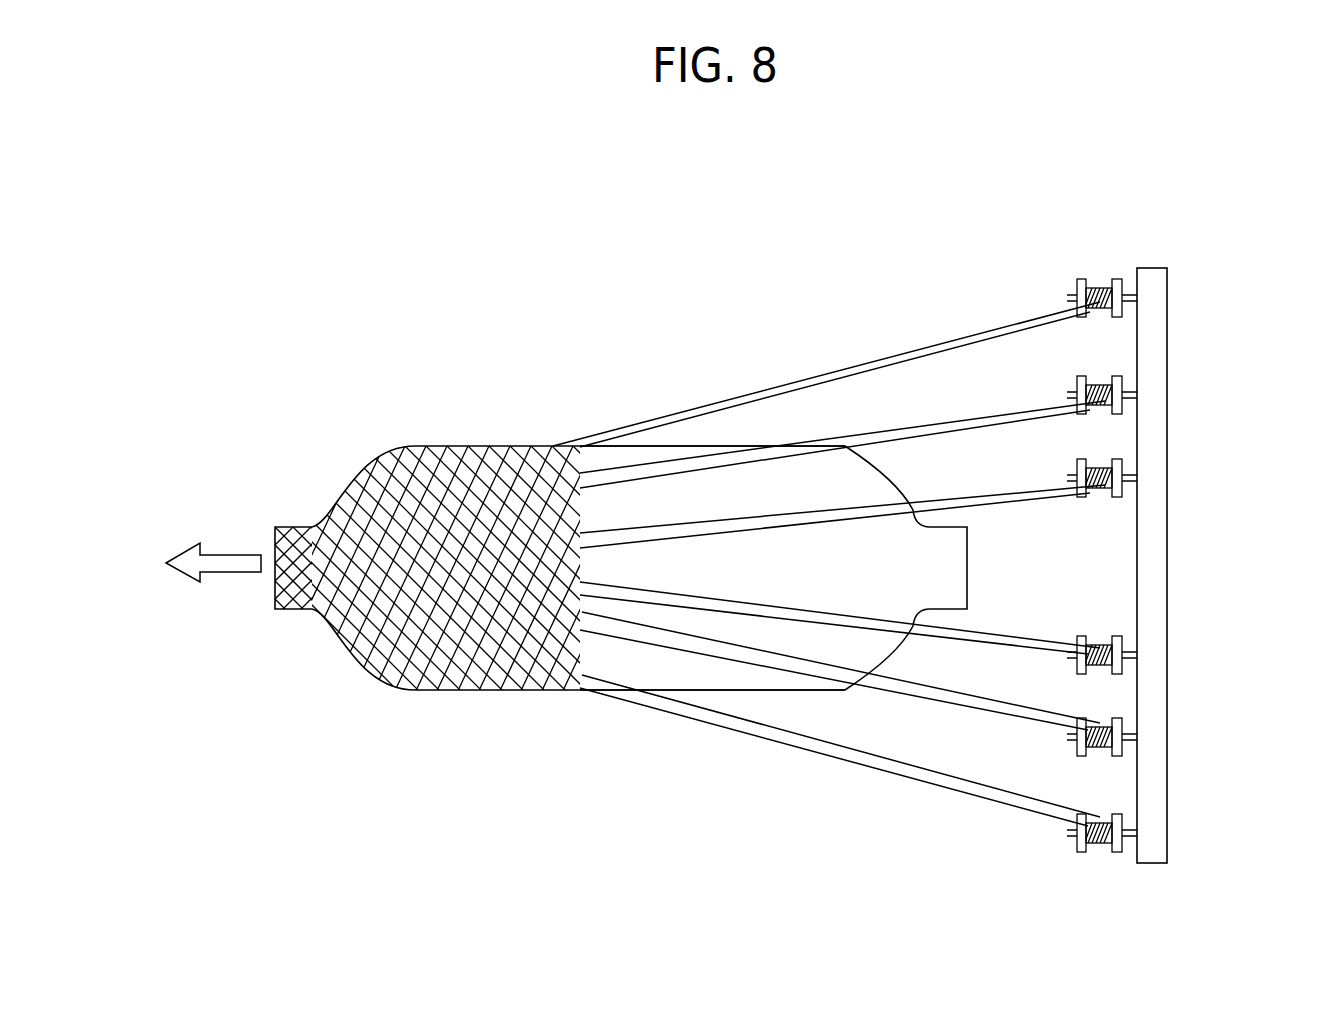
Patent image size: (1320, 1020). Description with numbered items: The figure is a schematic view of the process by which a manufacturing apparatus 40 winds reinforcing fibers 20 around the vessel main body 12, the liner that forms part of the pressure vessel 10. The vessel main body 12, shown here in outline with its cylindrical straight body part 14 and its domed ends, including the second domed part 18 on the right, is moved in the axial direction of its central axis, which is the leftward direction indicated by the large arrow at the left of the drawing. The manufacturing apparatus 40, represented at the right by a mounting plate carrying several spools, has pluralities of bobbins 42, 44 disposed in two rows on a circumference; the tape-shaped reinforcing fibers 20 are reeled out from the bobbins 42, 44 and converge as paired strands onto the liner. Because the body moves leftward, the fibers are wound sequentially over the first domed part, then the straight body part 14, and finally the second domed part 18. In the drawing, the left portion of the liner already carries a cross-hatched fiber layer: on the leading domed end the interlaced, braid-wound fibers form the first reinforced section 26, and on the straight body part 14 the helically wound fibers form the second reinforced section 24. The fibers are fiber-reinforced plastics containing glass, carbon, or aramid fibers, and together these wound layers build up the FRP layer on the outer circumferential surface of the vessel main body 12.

The pressure vessel 10 is at (365, 437).
The vessel main body 12 is at (979, 565).
The straight body part 14 is at (653, 438).
The second domed part 18 is at (902, 473).
The reinforcing fibers 20 is at (955, 340).
The second reinforced section 24 is at (495, 438).
The first reinforced section 26 is at (408, 699).
The manufacturing apparatus 40 is at (1169, 537).
The bobbin 42 is at (1102, 290).
The bobbin 44 is at (1105, 845).